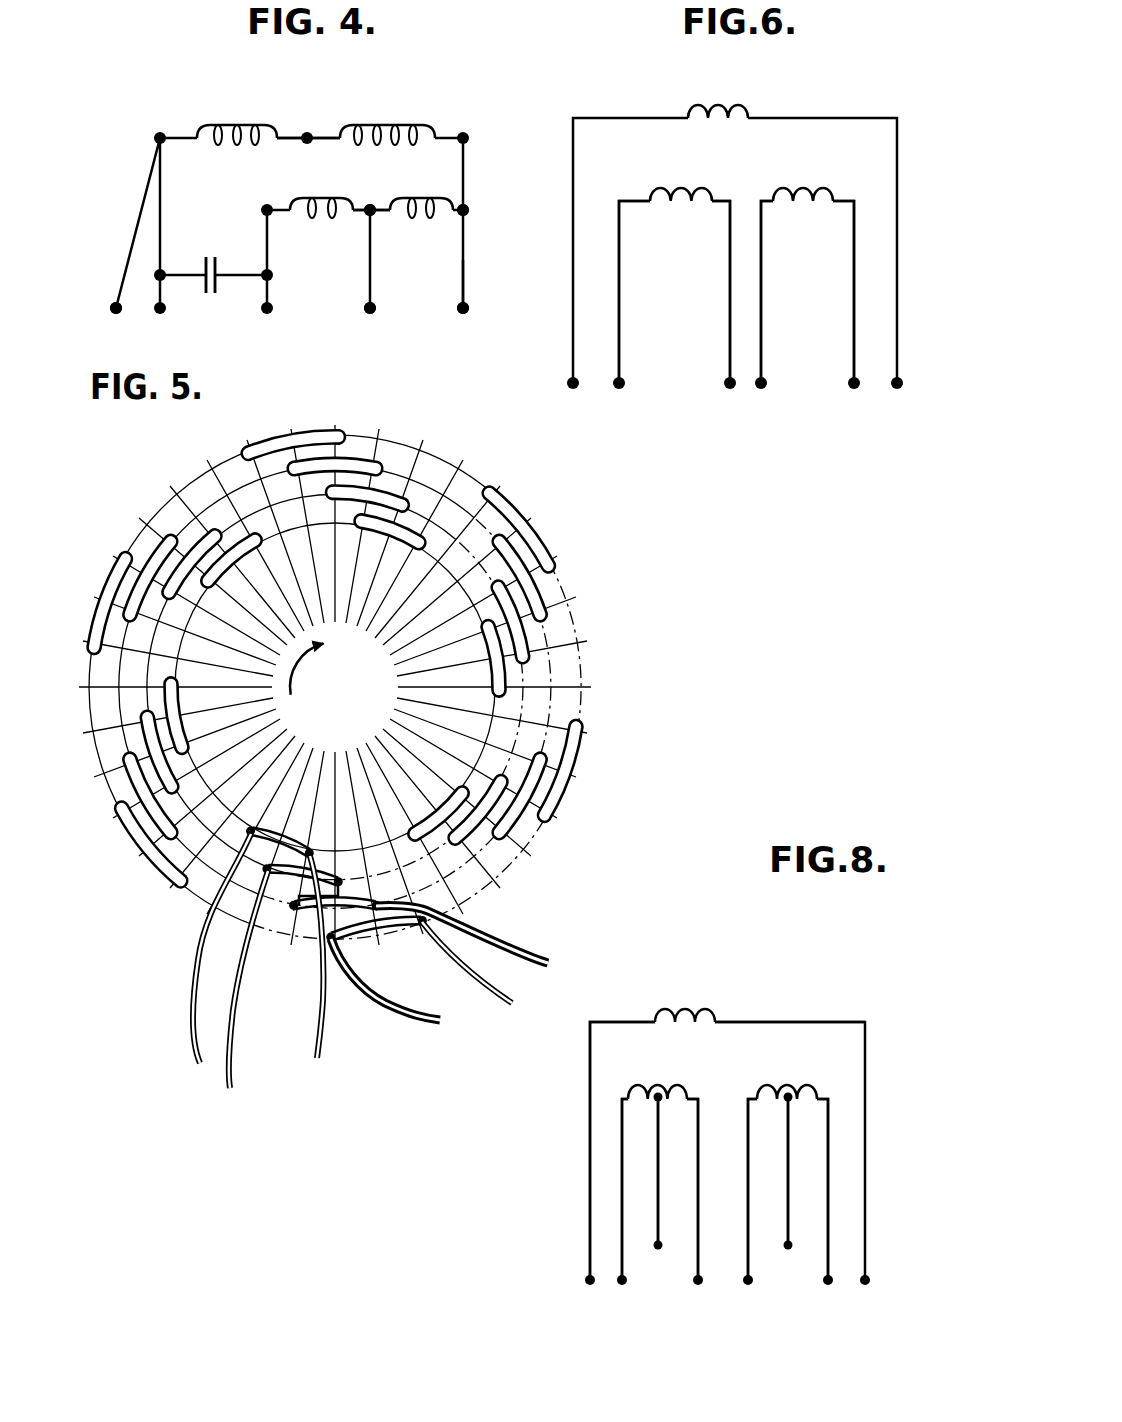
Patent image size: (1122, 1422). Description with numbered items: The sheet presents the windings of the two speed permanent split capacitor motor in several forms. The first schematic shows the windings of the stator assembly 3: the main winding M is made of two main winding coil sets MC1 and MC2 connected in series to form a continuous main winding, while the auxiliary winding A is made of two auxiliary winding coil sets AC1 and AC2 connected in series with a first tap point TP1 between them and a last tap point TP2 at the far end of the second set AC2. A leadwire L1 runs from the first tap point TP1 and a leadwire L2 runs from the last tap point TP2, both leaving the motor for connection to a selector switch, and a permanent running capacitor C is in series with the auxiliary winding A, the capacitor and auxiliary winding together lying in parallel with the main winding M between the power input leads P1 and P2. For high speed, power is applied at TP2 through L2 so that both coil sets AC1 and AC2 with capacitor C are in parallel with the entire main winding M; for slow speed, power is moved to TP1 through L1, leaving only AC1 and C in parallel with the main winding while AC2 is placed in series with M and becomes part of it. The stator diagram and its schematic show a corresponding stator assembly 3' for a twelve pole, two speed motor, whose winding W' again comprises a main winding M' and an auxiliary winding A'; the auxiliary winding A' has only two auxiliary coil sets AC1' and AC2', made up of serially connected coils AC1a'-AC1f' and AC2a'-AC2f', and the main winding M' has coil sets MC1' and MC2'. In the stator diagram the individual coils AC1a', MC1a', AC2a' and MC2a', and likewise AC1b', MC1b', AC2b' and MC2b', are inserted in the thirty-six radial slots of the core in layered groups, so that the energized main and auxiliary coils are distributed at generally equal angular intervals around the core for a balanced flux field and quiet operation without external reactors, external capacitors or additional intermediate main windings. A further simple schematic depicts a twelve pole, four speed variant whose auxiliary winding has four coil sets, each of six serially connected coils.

In FIG. 4, the stator assembly 3 is at (265, 202).
In FIG. 4, the second main winding coil set MC2 is at (246, 109).
In FIG. 4, the first main winding coil set MC1 is at (392, 107).
In FIG. 4, the main winding M is at (317, 93).
In FIG. 4, the first auxiliary winding coil set AC1 is at (303, 184).
In FIG. 4, the second auxiliary winding coil set AC2 is at (421, 184).
In FIG. 4, the auxiliary winding A is at (341, 276).
In FIG. 4, the first tap point TP1 is at (374, 214).
In FIG. 4, the last tap point TP2 is at (468, 211).
In FIG. 4, the permanent running capacitor C is at (219, 299).
In FIG. 4, the power input lead P1 is at (128, 322).
In FIG. 4, the power terminal 2 P2 is at (468, 322).
In FIG. 4, the leadwire L1 is at (367, 322).
In FIG. 4, the leadwire L2 is at (486, 286).
In FIG. 6, the stator assembly 3' is at (735, 222).
In FIG. 5, the stator assembly 3' is at (401, 687).
In FIG. 6, the main winding M' is at (714, 86).
In FIG. 5, the main winding M' is at (571, 599).
In FIG. 6, the auxiliary winding coil set AC1' is at (653, 173).
In FIG. 5, the auxiliary winding coil set AC1' is at (601, 771).
In FIG. 6, the auxiliary winding coil set AC2' is at (801, 173).
In FIG. 5, the auxiliary winding coil set AC2' is at (532, 831).
In FIG. 6, the auxiliary winding coils AC1a'-AC1f' is at (684, 317).
In FIG. 6, the auxiliary winding coils AC2a'-AC2f' is at (846, 317).
In FIG. 5, the auxiliary winding A' is at (605, 592).
In FIG. 5, the windings W' is at (471, 910).
In FIG. 5, the main winding coil set MC1' is at (566, 803).
In FIG. 5, the main winding coil set MC2' is at (494, 853).
In FIG. 5, the auxiliary winding coil AC1a' is at (79, 603).
In FIG. 5, the main winding coil MC1a' is at (108, 558).
In FIG. 5, the auxiliary winding coil AC2a' is at (149, 529).
In FIG. 5, the main winding coil MC2a' is at (185, 502).
In FIG. 5, the auxiliary winding coil AC1b' is at (107, 845).
In FIG. 5, the main winding coil MC1b' is at (99, 796).
In FIG. 5, the auxiliary winding coil AC2b' is at (100, 752).
In FIG. 5, the main winding coil MC2b' is at (105, 707).